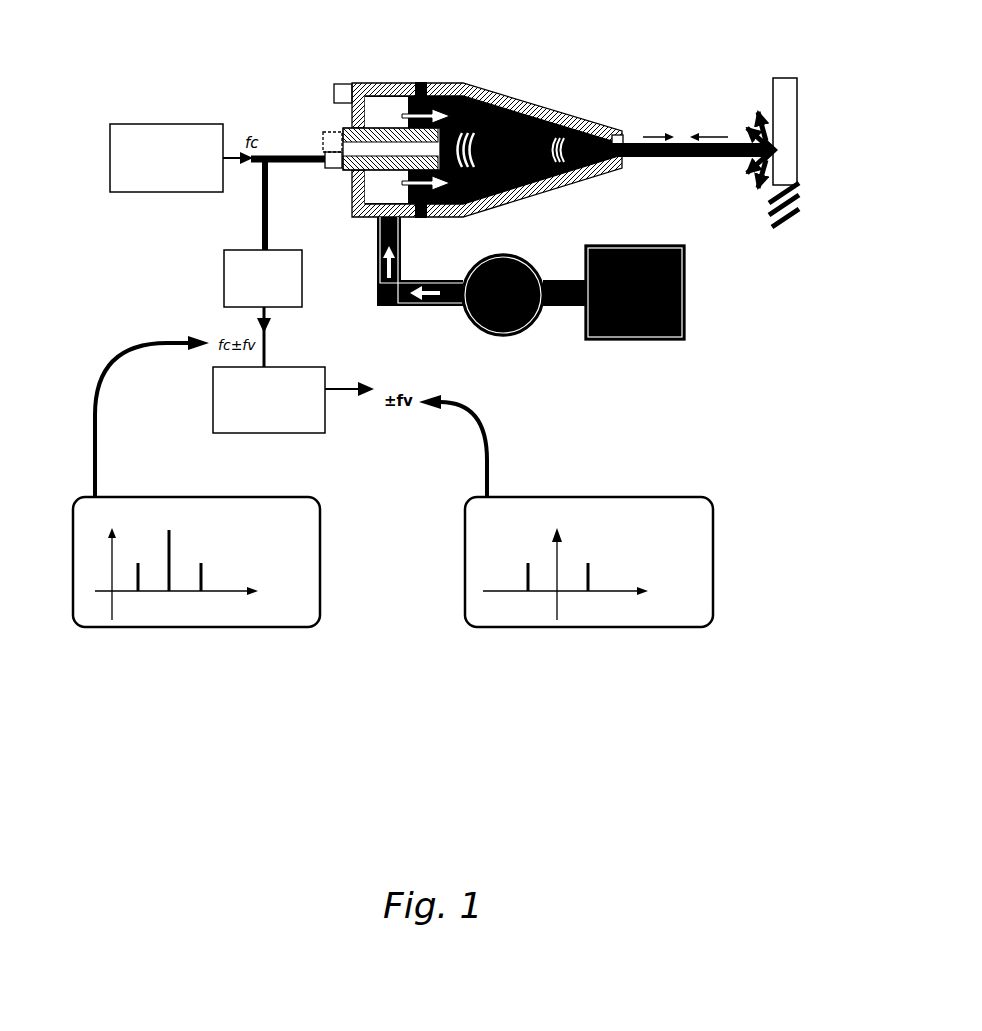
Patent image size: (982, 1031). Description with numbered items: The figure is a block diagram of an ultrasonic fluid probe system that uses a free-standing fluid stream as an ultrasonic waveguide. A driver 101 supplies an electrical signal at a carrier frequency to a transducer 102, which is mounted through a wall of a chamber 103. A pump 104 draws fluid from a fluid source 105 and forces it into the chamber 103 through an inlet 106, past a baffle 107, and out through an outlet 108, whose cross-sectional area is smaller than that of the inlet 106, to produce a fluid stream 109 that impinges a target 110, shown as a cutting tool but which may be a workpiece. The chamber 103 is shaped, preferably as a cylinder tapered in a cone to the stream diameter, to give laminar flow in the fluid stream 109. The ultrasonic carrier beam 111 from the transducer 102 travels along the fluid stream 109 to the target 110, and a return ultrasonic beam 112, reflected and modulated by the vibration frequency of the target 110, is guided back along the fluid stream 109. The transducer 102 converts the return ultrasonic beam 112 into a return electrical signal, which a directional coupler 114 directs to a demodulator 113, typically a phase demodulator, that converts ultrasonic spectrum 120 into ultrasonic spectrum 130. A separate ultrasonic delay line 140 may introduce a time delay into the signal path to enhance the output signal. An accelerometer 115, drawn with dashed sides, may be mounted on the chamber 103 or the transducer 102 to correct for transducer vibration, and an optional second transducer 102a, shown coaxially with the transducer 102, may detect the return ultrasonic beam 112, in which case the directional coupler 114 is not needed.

The driver 101 is at (132, 132).
The transducer 102 is at (370, 163).
The second transducer 102a is at (355, 150).
The chamber 103 is at (383, 85).
The pump 104 is at (512, 322).
The fluid source 105 is at (668, 336).
The inlet 106 is at (388, 208).
The baffle 107 is at (427, 95).
The outlet 108 is at (614, 134).
The fluid stream 109 is at (678, 148).
The target 110 is at (783, 150).
The ultrasonic carrier beam 111 is at (467, 133).
The return ultrasonic beam 112 is at (563, 153).
The demodulator 113 is at (226, 427).
The directional coupler 114 is at (337, 153).
The accelerometer 115 is at (327, 135).
The ultrasonic spectrum 120 is at (306, 529).
The ultrasonic spectrum 130 is at (700, 537).
The ultrasonic delay line 140 is at (233, 262).